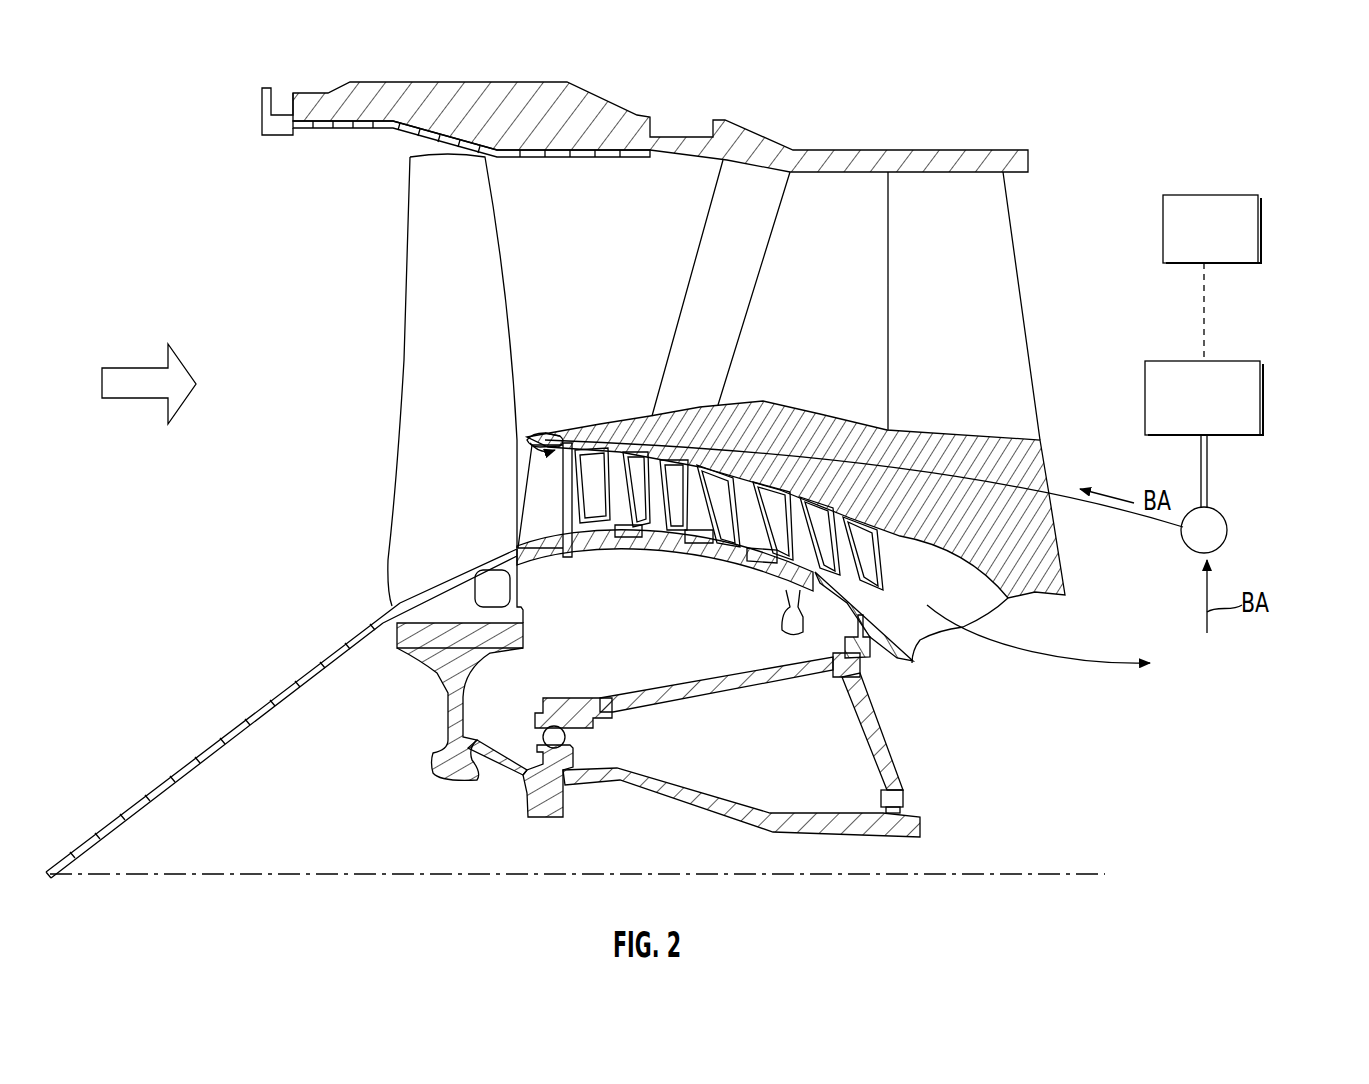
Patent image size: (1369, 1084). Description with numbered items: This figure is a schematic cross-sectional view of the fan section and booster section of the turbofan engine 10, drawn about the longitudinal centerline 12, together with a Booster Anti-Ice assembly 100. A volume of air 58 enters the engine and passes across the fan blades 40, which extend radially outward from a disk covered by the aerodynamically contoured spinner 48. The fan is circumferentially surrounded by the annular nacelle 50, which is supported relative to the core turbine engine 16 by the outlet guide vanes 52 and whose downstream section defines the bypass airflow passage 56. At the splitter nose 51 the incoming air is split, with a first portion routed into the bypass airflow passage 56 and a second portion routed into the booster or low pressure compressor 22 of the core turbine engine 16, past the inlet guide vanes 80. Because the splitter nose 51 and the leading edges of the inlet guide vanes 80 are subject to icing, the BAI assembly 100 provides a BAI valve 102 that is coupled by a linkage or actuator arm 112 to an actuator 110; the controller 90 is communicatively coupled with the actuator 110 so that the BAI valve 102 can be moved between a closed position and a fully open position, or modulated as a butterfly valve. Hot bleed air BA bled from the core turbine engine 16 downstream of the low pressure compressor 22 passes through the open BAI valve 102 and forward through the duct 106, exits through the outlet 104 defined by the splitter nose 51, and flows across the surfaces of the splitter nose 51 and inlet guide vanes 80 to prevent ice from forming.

The turbofan engine 10 is at (883, 106).
The longitudinal centerline 12 is at (262, 862).
The core turbine engine 16 is at (970, 562).
The booster or low pressure compressor 22 is at (684, 568).
The fan blades 40 is at (426, 408).
The spinner 48 is at (207, 745).
The nacelle 50 is at (593, 93).
The splitter nose 51 is at (527, 424).
The outlet guide vanes 52 is at (946, 305).
The bypass airflow passage 56 is at (670, 186).
The volume of air 58 is at (145, 362).
The inlet guide vanes 80 is at (540, 503).
The controller 90 is at (1193, 246).
The Booster Anti-Ice assembly 100 is at (1301, 367).
The BAI valve 102 is at (1228, 528).
The outlet 104 is at (560, 425).
The duct 106 is at (907, 463).
The actuator 110 is at (1178, 415).
The linkage or actuator arm 112 is at (1212, 466).